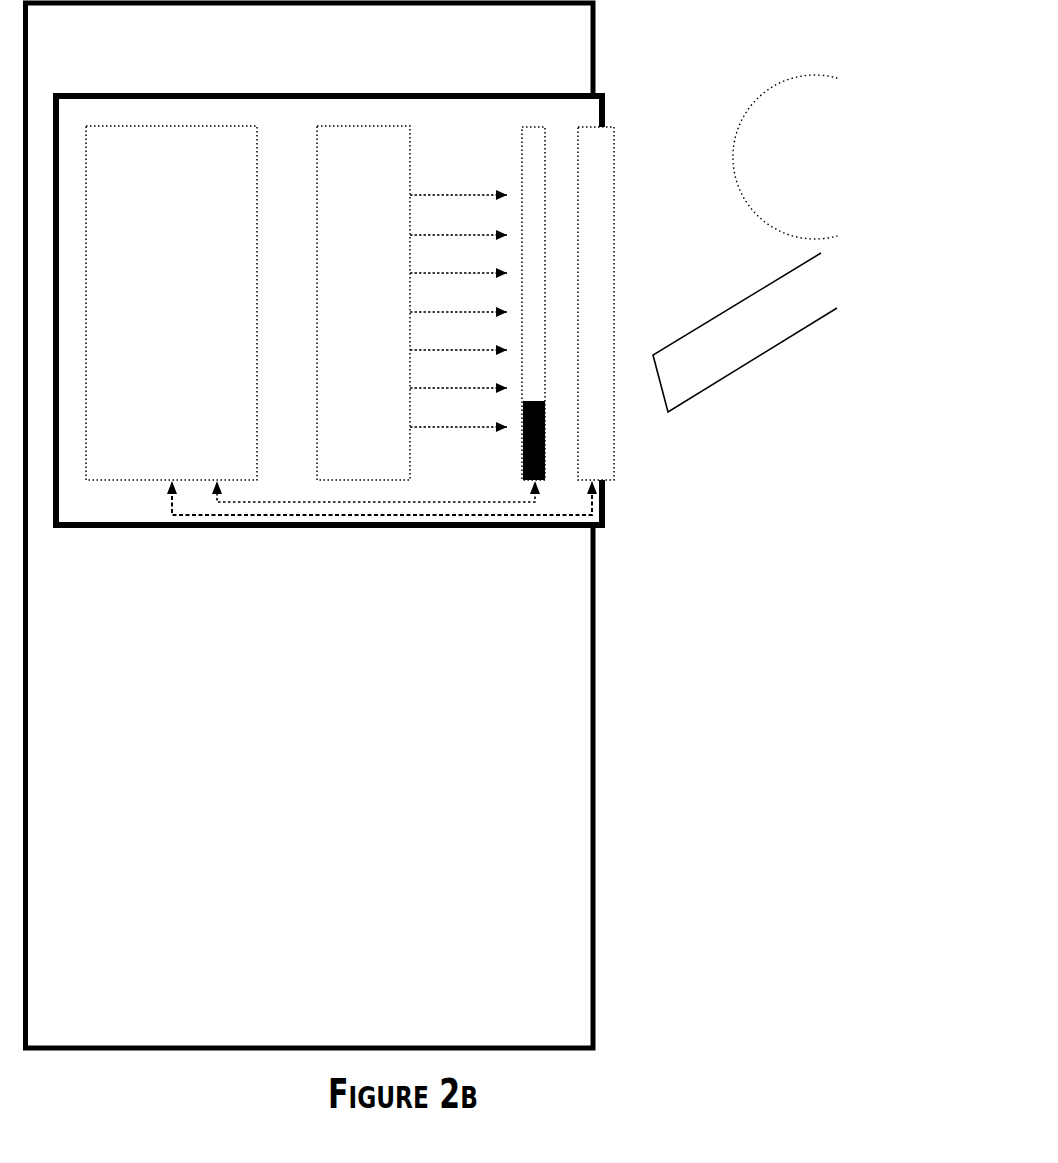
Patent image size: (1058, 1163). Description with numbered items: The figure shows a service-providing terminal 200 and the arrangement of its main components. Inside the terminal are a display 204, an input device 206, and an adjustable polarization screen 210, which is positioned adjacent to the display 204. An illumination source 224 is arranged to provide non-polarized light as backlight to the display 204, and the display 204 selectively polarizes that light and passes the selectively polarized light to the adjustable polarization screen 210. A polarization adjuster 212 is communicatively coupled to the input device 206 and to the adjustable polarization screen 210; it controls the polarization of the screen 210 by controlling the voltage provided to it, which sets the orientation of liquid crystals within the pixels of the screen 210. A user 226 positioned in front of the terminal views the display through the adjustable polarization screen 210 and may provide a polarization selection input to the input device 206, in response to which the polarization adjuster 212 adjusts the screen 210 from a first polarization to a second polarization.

The service-providing terminal 200 is at (551, 1030).
The display 204 is at (533, 122).
The input device 206 is at (517, 443).
The adjustable polarization screen 210 is at (618, 193).
The polarization adjuster 212 is at (188, 314).
The illumination source 224 is at (380, 314).
The user 226 is at (796, 322).